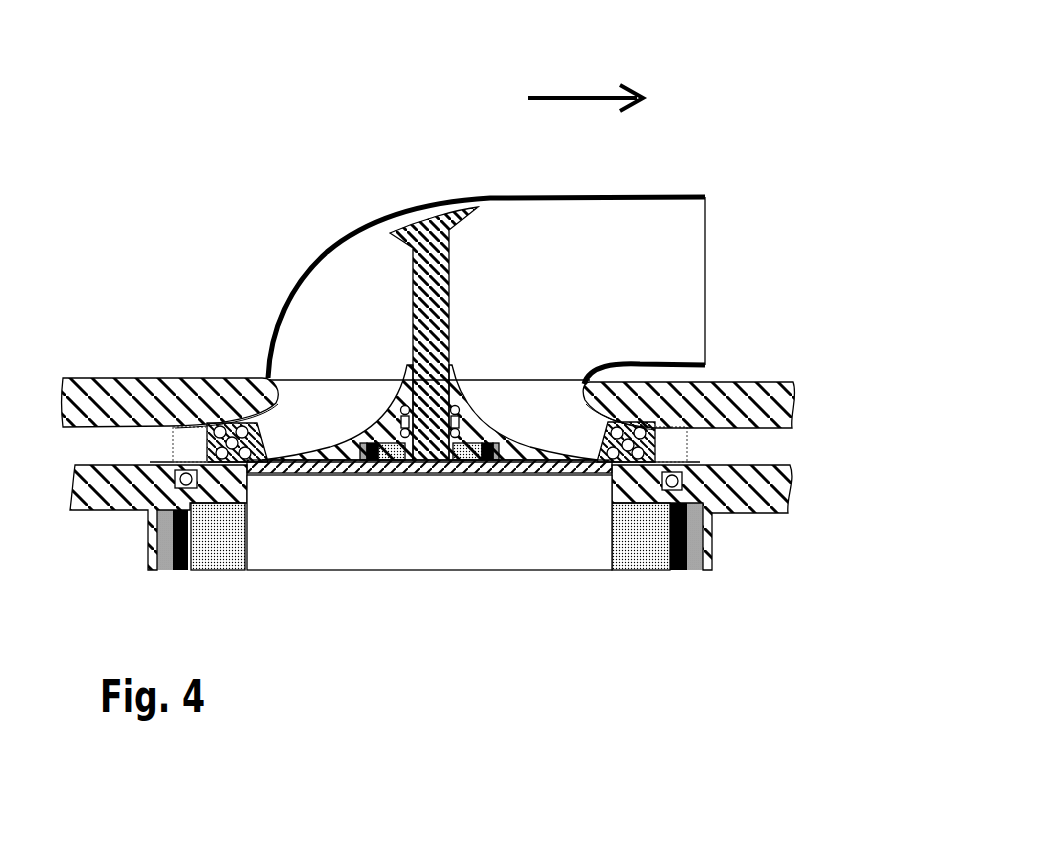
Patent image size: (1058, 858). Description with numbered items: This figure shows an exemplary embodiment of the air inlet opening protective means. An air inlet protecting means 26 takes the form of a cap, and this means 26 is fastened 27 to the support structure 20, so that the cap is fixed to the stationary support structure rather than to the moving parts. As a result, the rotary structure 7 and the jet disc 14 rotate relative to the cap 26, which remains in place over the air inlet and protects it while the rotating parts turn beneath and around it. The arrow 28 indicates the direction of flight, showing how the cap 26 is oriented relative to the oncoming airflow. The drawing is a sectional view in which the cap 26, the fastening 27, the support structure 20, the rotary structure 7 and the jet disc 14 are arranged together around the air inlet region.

The rotary structure 7 is at (172, 400).
The jet disc 14 is at (510, 442).
The support structure 20 is at (428, 458).
The air inlet protecting means 26 is at (326, 249).
The fastening 27 is at (428, 230).
The arrow 28 is at (573, 92).